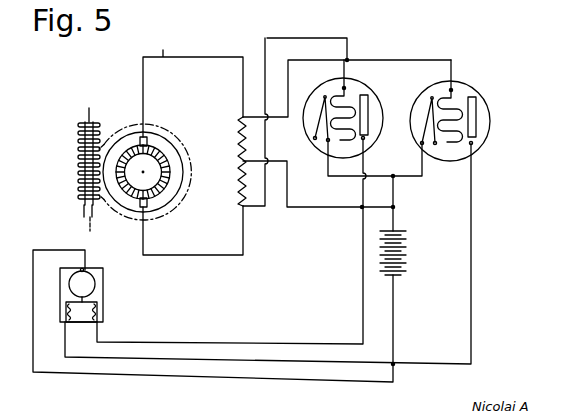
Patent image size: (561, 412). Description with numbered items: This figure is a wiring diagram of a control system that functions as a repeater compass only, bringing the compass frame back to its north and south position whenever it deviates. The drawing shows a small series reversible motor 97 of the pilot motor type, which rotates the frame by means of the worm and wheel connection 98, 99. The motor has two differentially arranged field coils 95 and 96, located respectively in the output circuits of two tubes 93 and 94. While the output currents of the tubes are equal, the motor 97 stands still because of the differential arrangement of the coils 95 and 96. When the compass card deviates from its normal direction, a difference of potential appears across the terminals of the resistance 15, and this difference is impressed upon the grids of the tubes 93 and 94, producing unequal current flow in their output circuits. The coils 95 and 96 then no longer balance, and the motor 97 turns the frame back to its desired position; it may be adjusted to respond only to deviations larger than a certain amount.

The resistance 15 is at (238, 134).
The tube 93 is at (355, 91).
The tube 94 is at (460, 92).
The field coil 95 is at (103, 315).
The field coil 96 is at (67, 308).
The series reversible motor 97 is at (97, 282).
The worm 98 is at (164, 208).
The wheel 99 is at (78, 180).